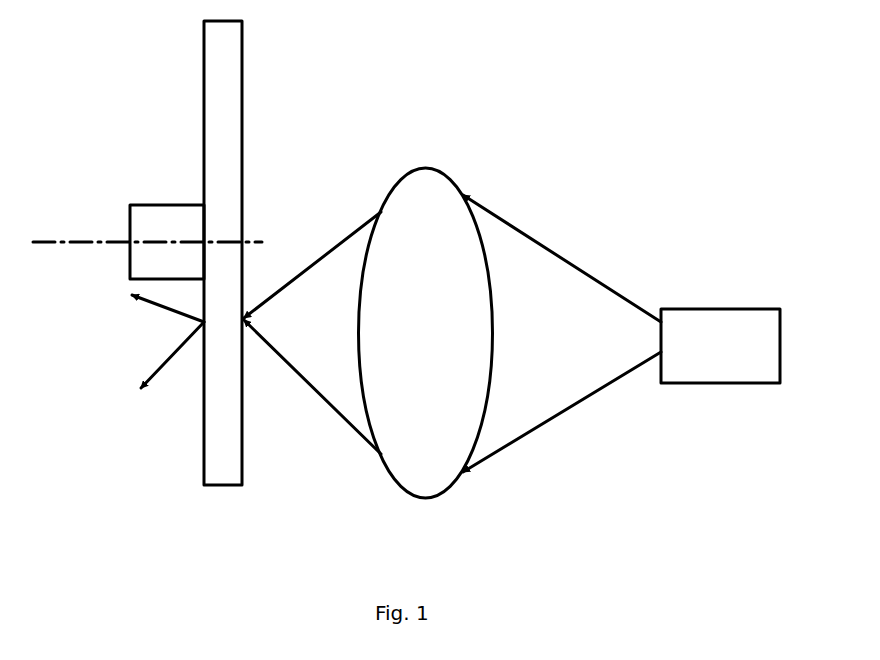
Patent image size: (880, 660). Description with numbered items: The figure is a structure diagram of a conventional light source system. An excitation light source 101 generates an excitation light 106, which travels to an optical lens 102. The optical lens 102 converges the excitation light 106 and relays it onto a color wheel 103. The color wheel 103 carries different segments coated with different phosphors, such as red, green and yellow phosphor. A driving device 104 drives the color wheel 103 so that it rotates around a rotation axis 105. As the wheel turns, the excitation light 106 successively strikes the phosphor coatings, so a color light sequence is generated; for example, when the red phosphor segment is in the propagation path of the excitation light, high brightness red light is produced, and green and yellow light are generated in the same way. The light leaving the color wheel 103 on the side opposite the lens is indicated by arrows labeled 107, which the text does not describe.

The excitation light source 101 is at (712, 383).
The optical lens 102 is at (427, 500).
The color wheel 103 is at (227, 485).
The driving device 104 is at (137, 196).
The rotation axis 105 is at (48, 245).
The excitation light 106 is at (556, 413).
The diffracted / reflected light 107 is at (163, 368).